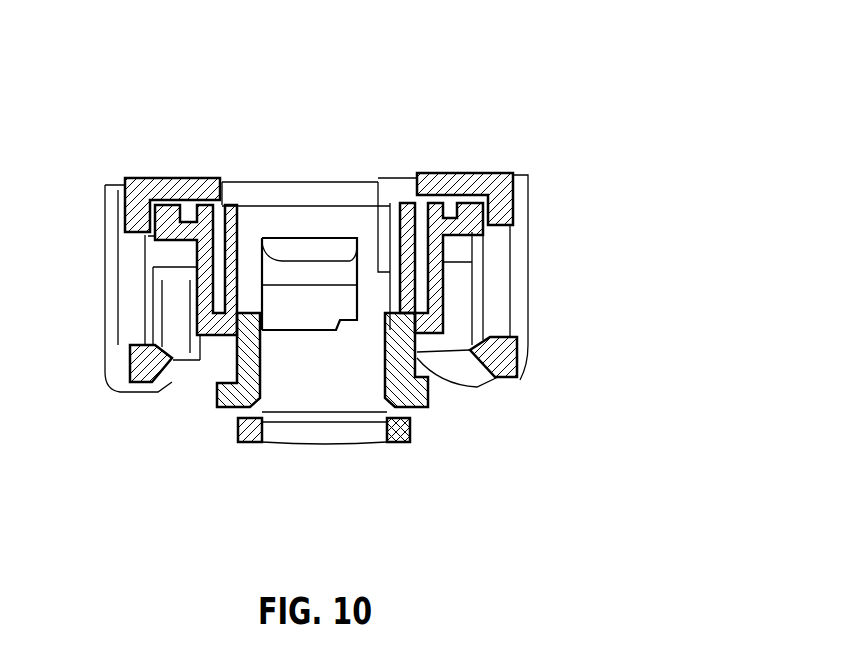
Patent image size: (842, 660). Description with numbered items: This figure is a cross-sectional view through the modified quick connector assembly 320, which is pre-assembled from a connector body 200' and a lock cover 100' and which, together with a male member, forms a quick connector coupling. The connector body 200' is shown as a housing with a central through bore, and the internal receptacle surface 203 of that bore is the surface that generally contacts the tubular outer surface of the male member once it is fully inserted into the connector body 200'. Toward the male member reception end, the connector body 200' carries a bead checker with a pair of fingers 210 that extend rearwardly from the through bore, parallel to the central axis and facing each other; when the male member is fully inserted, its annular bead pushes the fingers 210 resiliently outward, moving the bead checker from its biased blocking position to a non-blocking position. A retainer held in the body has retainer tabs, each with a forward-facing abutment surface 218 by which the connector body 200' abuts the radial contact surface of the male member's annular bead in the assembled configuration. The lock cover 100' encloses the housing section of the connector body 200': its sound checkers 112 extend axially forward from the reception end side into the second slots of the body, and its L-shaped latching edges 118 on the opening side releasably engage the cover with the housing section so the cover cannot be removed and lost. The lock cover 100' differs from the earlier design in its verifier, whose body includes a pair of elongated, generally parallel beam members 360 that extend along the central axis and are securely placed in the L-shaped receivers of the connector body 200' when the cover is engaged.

The quick connector assembly 320 is at (355, 105).
The lock cover 100' is at (316, 246).
The sound checkers 112 is at (513, 173).
The latching edges 118 is at (497, 372).
The fingers 210 is at (228, 262).
The beam members 360 is at (242, 273).
The abutment surface 218 is at (282, 286).
The connector body 200' is at (323, 483).
The internal receptacle surface 203 is at (342, 388).